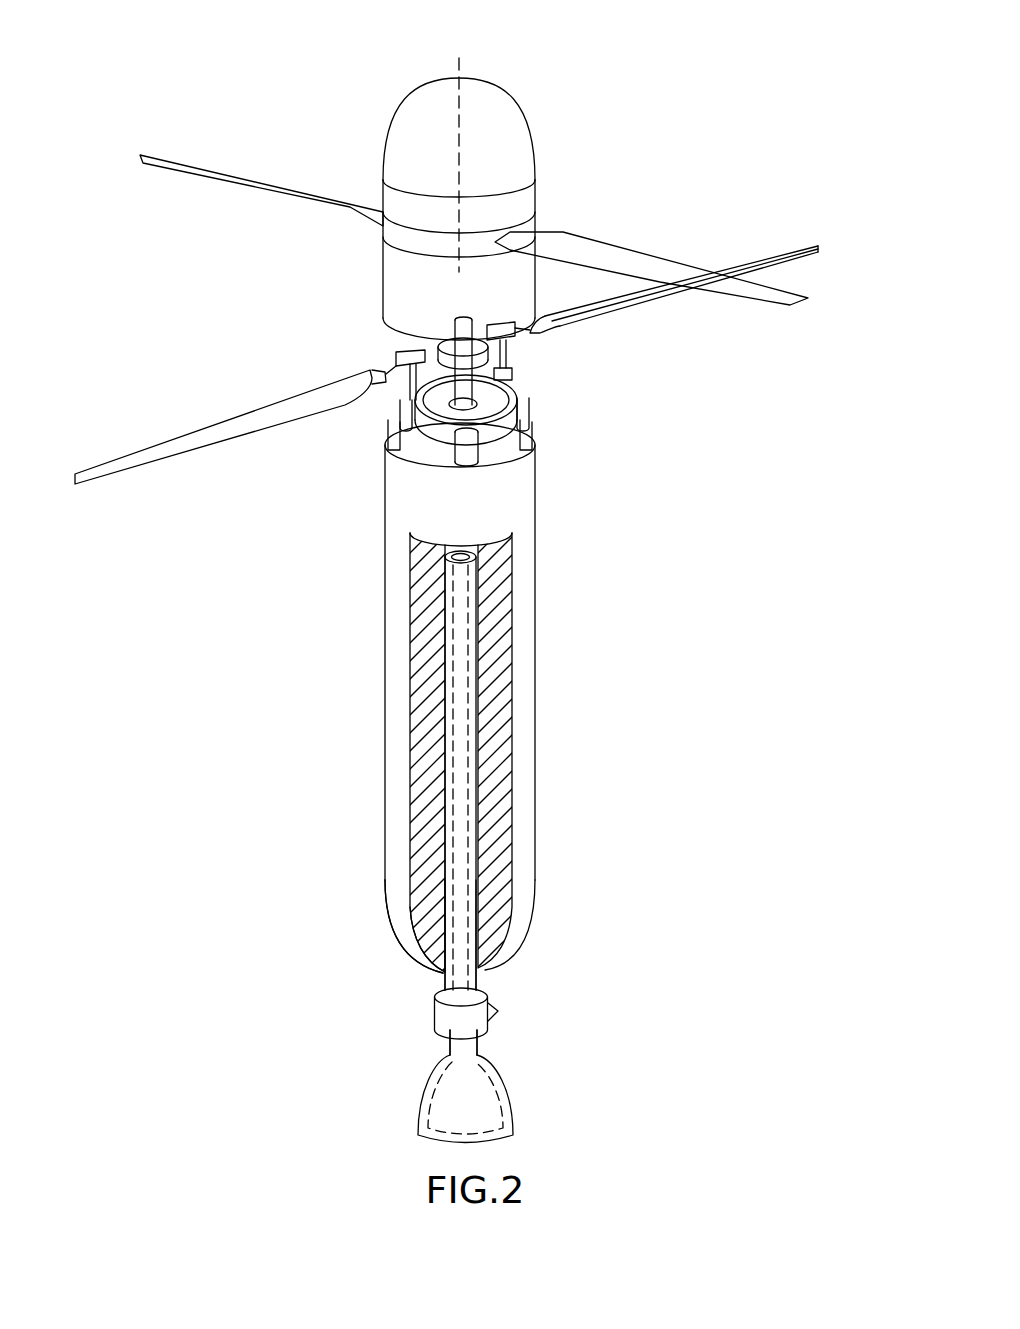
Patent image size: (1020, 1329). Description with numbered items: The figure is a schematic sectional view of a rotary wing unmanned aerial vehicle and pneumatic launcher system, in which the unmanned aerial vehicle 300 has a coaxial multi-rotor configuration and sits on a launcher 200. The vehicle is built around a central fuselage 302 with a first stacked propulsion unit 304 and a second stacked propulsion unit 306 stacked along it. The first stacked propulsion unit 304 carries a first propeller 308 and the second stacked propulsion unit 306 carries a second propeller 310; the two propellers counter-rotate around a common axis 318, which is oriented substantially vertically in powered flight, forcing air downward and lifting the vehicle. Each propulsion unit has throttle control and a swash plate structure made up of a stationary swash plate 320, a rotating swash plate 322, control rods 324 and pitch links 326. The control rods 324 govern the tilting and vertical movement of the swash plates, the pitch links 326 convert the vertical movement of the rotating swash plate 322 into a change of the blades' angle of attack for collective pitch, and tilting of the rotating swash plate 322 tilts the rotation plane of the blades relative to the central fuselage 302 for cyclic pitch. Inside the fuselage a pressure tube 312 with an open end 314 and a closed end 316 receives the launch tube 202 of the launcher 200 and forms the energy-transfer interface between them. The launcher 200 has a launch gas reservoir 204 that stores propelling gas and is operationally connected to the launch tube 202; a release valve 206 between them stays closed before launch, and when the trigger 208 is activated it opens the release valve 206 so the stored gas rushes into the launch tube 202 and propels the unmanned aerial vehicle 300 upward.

The launcher 200 is at (435, 1068).
The launch tube 202 is at (460, 880).
The launch gas reservoir 204 is at (470, 1122).
The release valve 206 is at (494, 970).
The trigger 208 is at (497, 1010).
The unmanned aerial vehicle 300 is at (383, 787).
The central fuselage 302 is at (420, 650).
The first stacked propulsion unit 304 is at (518, 208).
The second stacked propulsion unit 306 is at (495, 512).
The first propeller 308 is at (222, 187).
The second propeller 310 is at (725, 247).
The pressure tube 312 is at (482, 600).
The open end 314 is at (436, 960).
The closed end 316 is at (448, 545).
The common axis 318 is at (459, 78).
The stationary swash plate 320 is at (517, 418).
The rotating swash plate 322 is at (520, 390).
The control rods 324 is at (345, 406).
The pitch links 326 is at (393, 372).